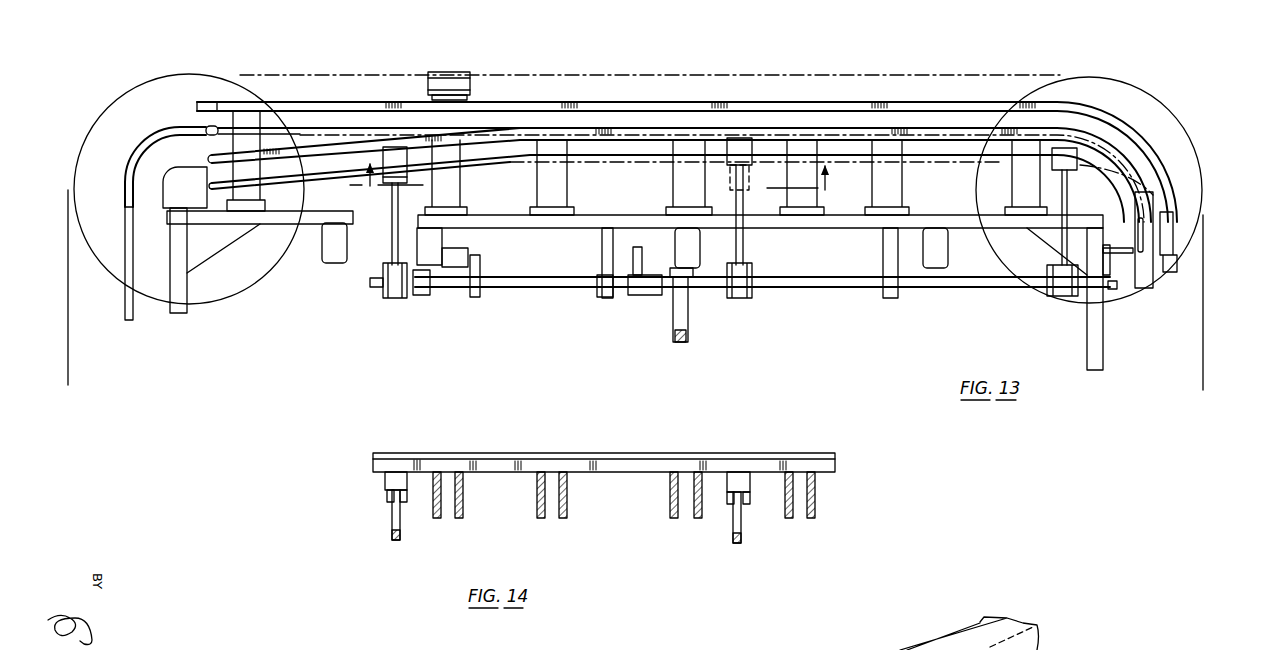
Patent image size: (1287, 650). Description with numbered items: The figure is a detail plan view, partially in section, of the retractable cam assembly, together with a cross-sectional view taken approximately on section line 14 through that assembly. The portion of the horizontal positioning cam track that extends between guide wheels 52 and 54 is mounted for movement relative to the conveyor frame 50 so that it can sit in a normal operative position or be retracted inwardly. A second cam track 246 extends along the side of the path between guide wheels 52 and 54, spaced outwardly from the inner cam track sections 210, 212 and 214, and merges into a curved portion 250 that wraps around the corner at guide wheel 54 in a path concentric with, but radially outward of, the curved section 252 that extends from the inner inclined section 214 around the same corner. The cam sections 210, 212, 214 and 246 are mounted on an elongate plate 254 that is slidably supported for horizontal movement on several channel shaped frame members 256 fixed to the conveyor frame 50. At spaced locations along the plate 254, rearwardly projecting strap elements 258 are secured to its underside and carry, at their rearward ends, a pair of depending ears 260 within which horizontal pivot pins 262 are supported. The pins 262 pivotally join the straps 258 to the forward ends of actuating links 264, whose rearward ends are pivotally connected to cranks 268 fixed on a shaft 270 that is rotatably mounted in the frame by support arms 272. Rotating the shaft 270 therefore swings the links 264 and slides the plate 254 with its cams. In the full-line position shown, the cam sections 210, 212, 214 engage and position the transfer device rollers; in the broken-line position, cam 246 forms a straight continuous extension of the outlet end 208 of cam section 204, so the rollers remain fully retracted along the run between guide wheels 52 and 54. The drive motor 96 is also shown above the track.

In FIG. 13, the section line 14 is at (600, 187).
In FIG. 13, the conveyor frame 50 is at (553, 234).
In FIG. 13, the guide wheel 52 is at (240, 292).
In FIG. 13, the guide wheel 54 is at (1126, 306).
In FIG. 13, the drive motor 96 is at (440, 72).
In FIG. 13, the cam section 204 is at (140, 168).
In FIG. 13, the outlet end 208 is at (212, 127).
In FIG. 13, the cam track section 210 is at (290, 163).
In FIG. 13, the cam track section 212 is at (608, 132).
In FIG. 13, the inner inclined section 214 is at (1052, 112).
In FIG. 14, the inner inclined section 214 is at (583, 453).
In FIG. 13, the second cam track 246 is at (650, 110).
In FIG. 13, the curved portion 250 is at (1177, 170).
In FIG. 13, the curved section 252 is at (1137, 188).
In FIG. 13, the elongate plate 254 is at (570, 122).
In FIG. 14, the elongate plate 254 is at (610, 471).
In FIG. 13, the channel shaped frame member 256 is at (462, 198).
In FIG. 14, the channel shaped frame member 256 is at (463, 500).
In FIG. 13, the strap element 258 is at (410, 160).
In FIG. 14, the strap element 258 is at (392, 482).
In FIG. 14, the depending ear 260 is at (410, 498).
In FIG. 14, the pivot pin 262 is at (387, 496).
In FIG. 13, the actuating link 264 is at (393, 247).
In FIG. 14, the actuating link 264 is at (398, 541).
In FIG. 13, the crank 268 is at (396, 290).
In FIG. 13, the shaft 270 is at (838, 290).
In FIG. 13, the support arm 272 is at (606, 260).